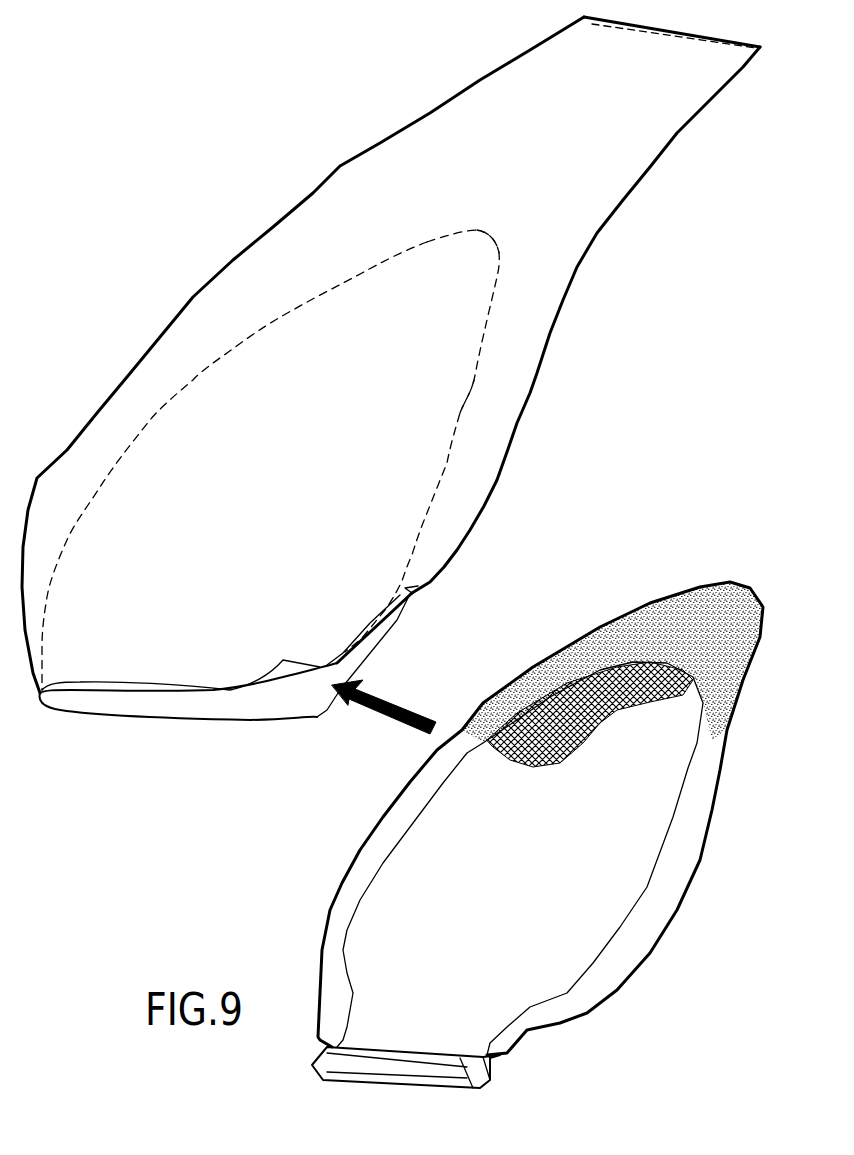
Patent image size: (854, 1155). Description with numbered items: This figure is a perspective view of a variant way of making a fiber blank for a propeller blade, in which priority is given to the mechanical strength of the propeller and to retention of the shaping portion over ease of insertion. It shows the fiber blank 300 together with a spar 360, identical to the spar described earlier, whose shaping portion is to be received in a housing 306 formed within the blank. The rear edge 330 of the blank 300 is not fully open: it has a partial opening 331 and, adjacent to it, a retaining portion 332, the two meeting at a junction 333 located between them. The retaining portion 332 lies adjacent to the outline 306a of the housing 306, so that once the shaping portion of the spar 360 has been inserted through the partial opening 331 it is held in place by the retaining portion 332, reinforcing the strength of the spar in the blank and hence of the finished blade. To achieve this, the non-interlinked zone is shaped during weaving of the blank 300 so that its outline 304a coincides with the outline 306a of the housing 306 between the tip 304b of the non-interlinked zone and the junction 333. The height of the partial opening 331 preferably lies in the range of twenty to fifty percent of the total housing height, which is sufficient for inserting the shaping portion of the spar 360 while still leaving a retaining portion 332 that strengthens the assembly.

The fiber blank 300 is at (280, 160).
The outline of the non-interlinked zone 304a is at (362, 273).
The tip of the non-interlinked zone 304b is at (487, 235).
The housing 306 is at (182, 700).
The outline of the housing 306a is at (462, 405).
The rear edge 330 is at (560, 308).
The partial opening 331 is at (398, 628).
The retaining portion 332 is at (477, 488).
The junction 333 is at (415, 592).
The spar 360 is at (654, 582).